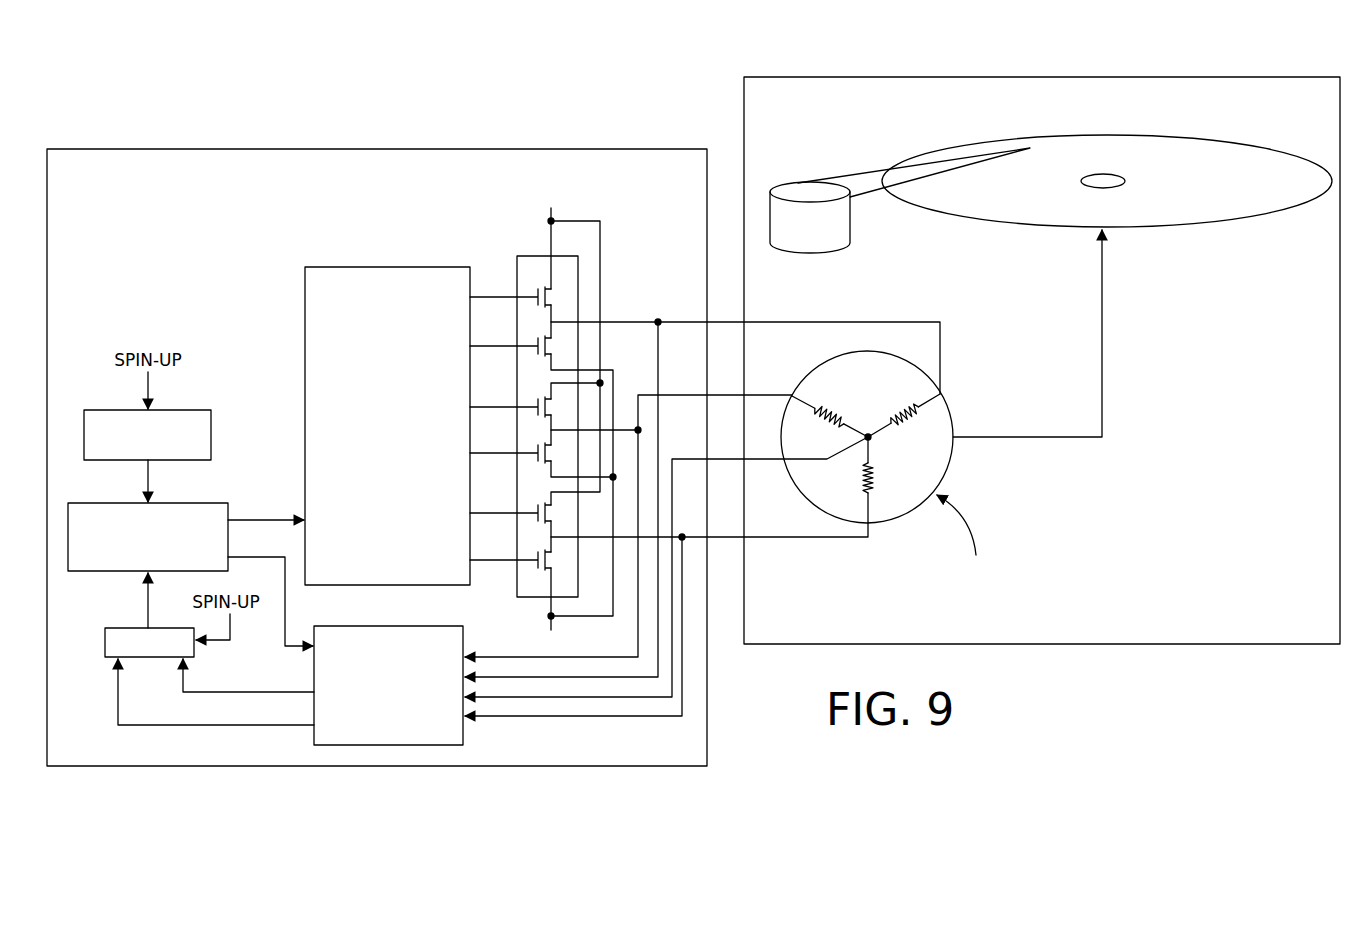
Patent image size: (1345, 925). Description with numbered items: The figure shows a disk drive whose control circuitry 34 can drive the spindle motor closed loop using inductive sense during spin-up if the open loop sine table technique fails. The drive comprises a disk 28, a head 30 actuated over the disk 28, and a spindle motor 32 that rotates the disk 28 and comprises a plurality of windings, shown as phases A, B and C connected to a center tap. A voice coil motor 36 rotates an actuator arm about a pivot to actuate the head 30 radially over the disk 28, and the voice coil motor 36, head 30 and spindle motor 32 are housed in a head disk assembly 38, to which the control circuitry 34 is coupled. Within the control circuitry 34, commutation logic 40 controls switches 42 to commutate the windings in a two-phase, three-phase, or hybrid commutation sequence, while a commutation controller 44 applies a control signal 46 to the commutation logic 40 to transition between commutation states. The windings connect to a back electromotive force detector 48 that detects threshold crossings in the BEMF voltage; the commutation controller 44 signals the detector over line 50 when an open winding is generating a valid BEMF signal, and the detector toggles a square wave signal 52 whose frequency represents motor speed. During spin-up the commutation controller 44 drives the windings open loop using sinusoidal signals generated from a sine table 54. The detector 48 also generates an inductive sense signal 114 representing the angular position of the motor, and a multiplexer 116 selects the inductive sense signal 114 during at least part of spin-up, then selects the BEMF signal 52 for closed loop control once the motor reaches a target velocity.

The disk 28 is at (1213, 224).
The head 30 is at (1031, 155).
The spindle motor 32 is at (951, 457).
The control circuitry 34 is at (183, 149).
The voice coil motor 36 is at (812, 254).
The head disk assembly 38 is at (970, 76).
The commutation logic 40 is at (305, 359).
The switches 42 is at (527, 253).
The commutation controller 44 is at (86, 572).
The control signal 46 is at (256, 518).
The back electromotive force detector 48 is at (390, 624).
The line 50 is at (286, 604).
The square wave signal 52 is at (212, 691).
The sine table 54 is at (211, 435).
The inductive sense signal 114 is at (118, 702).
The multiplexer 116 is at (148, 658).